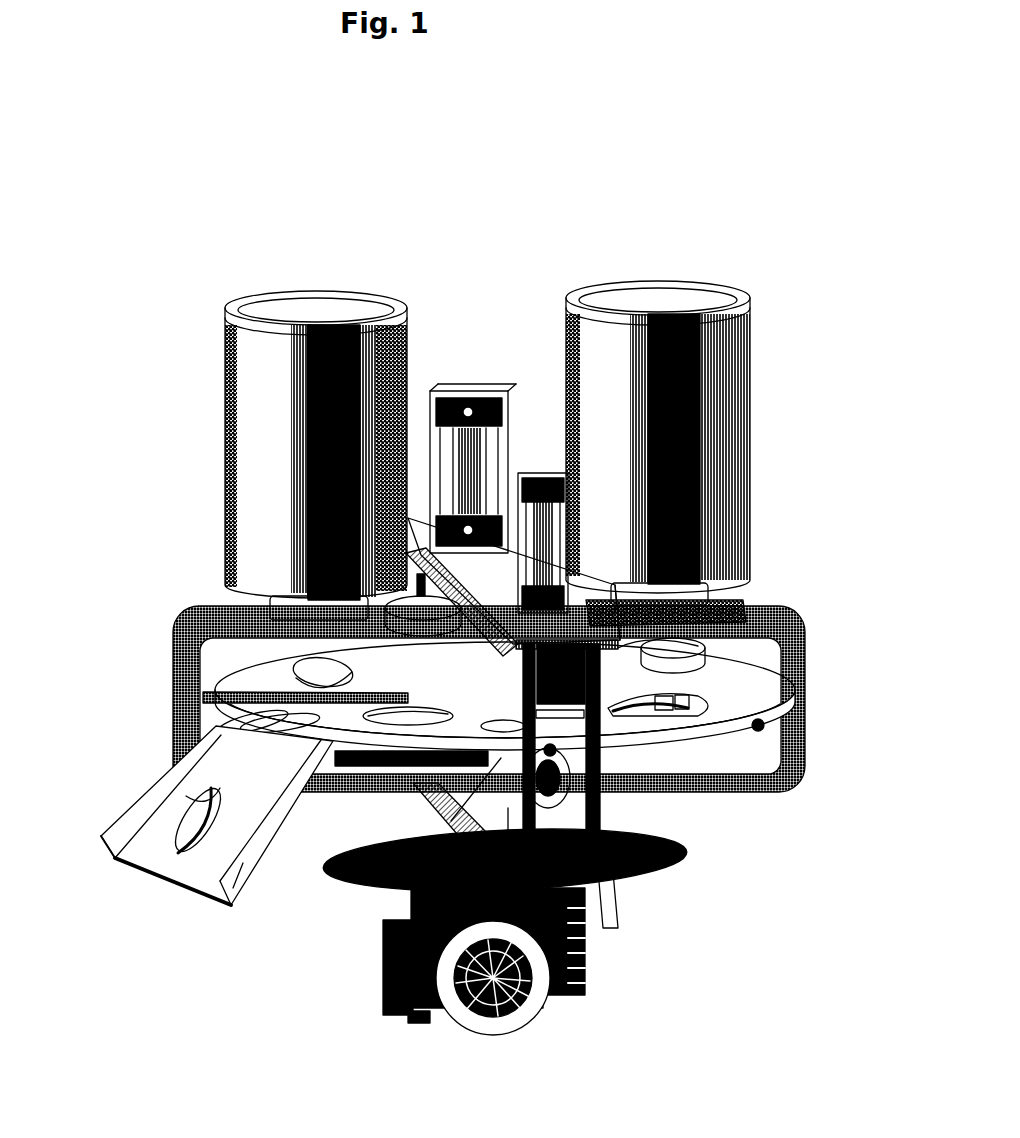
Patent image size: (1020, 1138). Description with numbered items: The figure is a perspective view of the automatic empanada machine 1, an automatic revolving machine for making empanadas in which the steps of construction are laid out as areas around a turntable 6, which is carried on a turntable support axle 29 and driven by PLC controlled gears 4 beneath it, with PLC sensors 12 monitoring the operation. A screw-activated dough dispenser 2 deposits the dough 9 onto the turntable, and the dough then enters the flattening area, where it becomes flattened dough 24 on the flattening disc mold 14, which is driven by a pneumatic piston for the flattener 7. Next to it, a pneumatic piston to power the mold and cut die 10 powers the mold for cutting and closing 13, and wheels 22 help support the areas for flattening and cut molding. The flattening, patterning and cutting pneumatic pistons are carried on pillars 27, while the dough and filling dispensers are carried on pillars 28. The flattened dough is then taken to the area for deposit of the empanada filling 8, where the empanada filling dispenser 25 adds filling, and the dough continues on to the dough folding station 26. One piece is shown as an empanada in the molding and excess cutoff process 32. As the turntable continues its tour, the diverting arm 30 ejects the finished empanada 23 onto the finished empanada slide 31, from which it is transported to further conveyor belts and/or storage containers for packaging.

The automatic empanada machine 1 is at (430, 212).
The dough dispenser 2 is at (282, 300).
The PLC controlled gears 4 is at (560, 932).
The turntable 6 is at (720, 670).
The pneumatic piston for flattener 7 is at (458, 380).
The empanada filling 8 is at (690, 640).
The dough 9 is at (307, 660).
The pneumatic piston to power the mold and cut die 10 is at (523, 468).
The PLC sensors 12 is at (754, 720).
The mold for cutting and closing 13 is at (575, 685).
The flattening disc mold 14 is at (298, 490).
The wheels 22 is at (362, 872).
The finished empanada 23 is at (190, 808).
The flattened dough 24 is at (423, 645).
The empanada filling dispenser 25 is at (662, 285).
The dough folding station 26 is at (663, 707).
The pillars to support pneumatic pistons 27 is at (605, 642).
The pillars to support dispensers 28 is at (660, 650).
The turntable support axle 29 is at (470, 757).
The diverting arm 30 is at (240, 690).
The finished empanada slide 31 is at (237, 853).
The empanada in the molding and excess cutoff process 32 is at (548, 712).